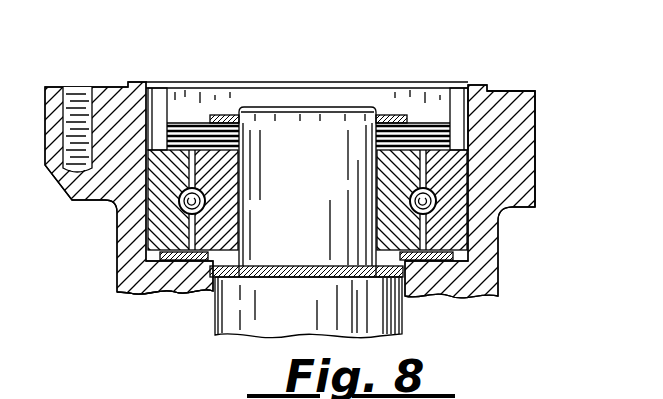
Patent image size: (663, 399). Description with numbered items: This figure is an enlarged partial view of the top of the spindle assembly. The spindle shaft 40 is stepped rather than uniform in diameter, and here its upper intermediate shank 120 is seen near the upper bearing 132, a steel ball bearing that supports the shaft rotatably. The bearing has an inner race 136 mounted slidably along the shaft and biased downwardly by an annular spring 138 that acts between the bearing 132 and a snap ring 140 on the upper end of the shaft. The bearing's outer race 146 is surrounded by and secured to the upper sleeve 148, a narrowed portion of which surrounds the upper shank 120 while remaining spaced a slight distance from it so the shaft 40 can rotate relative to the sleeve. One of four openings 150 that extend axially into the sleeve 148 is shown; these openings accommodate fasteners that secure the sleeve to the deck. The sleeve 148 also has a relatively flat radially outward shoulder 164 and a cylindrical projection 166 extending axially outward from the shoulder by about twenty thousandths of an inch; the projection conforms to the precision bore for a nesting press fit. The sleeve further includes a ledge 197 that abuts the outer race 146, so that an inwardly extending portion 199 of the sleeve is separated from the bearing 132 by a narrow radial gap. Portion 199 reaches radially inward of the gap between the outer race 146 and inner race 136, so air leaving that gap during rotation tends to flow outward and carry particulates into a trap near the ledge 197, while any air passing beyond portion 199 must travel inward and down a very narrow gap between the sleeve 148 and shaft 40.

The spindle shaft 40 is at (247, 313).
The upper intermediate shank 120 is at (400, 316).
The upper bearing 132 is at (440, 210).
The inner race 136 is at (227, 222).
The annular spring 138 is at (173, 118).
The snap ring 140 is at (222, 112).
The outer race 146 is at (165, 227).
The upper sleeve 148 is at (518, 164).
The opening 150 is at (82, 102).
The radially outward shoulder 164 is at (535, 91).
The cylindrical projection 166 is at (292, 83).
The ledge 197 is at (160, 253).
The inwardly extending portion 199 is at (150, 293).